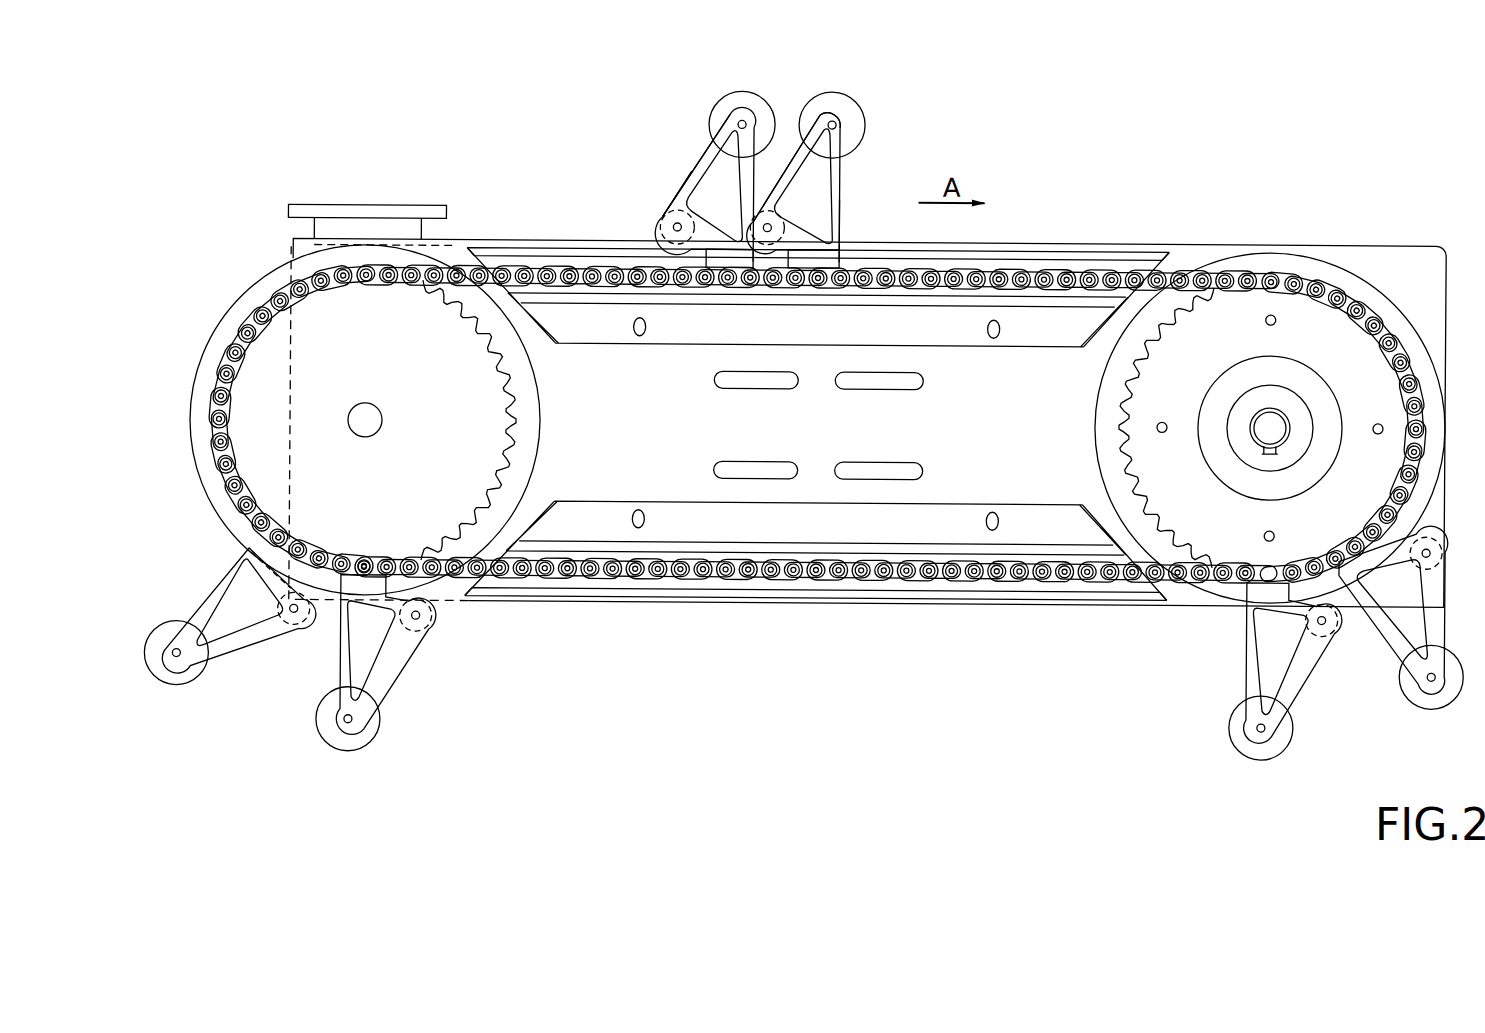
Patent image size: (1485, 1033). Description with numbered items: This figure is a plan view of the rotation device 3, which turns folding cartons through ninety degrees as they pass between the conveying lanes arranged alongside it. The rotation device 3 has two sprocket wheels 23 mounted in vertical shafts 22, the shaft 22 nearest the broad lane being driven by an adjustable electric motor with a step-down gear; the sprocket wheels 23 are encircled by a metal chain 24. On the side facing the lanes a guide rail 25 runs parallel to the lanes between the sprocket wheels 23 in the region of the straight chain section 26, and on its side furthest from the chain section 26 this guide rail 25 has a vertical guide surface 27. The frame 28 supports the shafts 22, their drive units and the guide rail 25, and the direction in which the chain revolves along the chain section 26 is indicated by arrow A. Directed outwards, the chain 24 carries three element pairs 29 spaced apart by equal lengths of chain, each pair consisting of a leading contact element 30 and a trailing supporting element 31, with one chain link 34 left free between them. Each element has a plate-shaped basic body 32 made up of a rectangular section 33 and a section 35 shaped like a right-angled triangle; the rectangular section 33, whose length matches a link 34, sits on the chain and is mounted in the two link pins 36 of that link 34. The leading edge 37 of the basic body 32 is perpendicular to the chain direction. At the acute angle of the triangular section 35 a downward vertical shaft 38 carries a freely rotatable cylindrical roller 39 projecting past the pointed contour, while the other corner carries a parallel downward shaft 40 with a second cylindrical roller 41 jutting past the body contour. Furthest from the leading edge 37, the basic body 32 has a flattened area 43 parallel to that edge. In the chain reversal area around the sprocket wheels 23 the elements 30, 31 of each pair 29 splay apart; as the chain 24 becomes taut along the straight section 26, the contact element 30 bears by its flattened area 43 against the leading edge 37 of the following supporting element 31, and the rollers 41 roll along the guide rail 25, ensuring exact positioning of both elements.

The rotation device 3 is at (1157, 185).
The vertical shaft 22 is at (348, 424).
The sprocket wheel 23 is at (260, 346).
The metal chain 24 is at (1218, 286).
The guide rail 25 is at (1122, 243).
The straight chain section 26 is at (985, 262).
The vertical guide surface 27 is at (545, 248).
The frame 28 is at (655, 612).
The element pair 29 is at (870, 70).
The leading contact element 30 is at (872, 161).
The trailing supporting element 31 is at (700, 128).
The plate-shaped basic body 32 is at (683, 166).
The rectangular section 33 is at (740, 296).
The chain link 34 is at (822, 581).
The triangular section 35 is at (682, 190).
The link pin 36 is at (728, 290).
The leading edge 37 is at (847, 150).
The vertical shaft 38 is at (834, 124).
The cylindrical roller 39 is at (748, 93).
The shaft 40 is at (794, 222).
The cylindrical roller 41 is at (790, 207).
The flattened area 43 is at (667, 222).